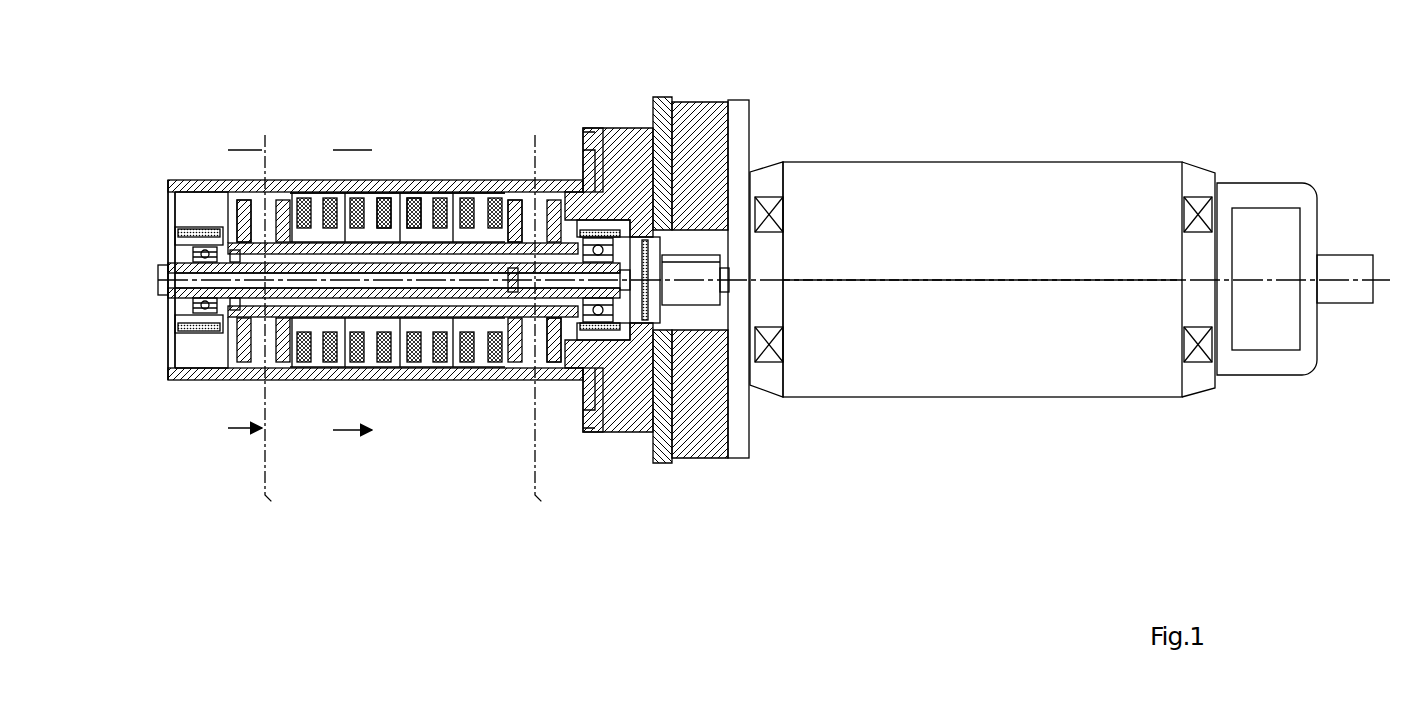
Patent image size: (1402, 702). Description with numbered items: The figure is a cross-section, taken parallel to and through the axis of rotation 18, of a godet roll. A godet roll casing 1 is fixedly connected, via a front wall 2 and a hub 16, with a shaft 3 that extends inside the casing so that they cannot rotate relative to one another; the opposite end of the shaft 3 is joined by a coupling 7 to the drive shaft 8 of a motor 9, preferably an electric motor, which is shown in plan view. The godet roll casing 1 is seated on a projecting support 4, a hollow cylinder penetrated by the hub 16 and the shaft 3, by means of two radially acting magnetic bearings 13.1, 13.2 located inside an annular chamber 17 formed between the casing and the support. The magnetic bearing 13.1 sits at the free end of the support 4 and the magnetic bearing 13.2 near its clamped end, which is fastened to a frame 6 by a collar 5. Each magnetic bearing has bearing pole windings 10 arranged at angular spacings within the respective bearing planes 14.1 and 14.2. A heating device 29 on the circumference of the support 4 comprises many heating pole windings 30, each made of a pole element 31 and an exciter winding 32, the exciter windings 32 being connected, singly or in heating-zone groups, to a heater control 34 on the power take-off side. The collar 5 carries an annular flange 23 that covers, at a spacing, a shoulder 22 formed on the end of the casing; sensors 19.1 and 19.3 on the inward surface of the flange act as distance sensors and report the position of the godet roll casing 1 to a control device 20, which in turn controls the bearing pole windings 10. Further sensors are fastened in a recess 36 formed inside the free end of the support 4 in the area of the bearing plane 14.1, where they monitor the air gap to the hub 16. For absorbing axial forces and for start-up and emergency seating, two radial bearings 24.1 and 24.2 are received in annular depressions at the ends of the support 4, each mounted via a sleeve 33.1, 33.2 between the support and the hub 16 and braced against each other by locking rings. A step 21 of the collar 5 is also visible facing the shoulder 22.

The godet roll casing 1 is at (180, 182).
The front wall 2 is at (167, 195).
The shaft 3 is at (531, 276).
The projecting support 4 is at (397, 222).
The collar 5 is at (661, 106).
The frame 6 is at (693, 103).
The coupling 7 is at (646, 266).
The drive shaft 8 is at (733, 268).
The motor 9 is at (862, 218).
The bearing pole windings 10 is at (283, 357).
The magnetic bearing 13.1 is at (268, 172).
The magnetic bearing 13.2 is at (544, 170).
The bearing plane 14.1 is at (258, 326).
The bearing plane 14.2 is at (452, 326).
The hub 16 is at (262, 258).
The annular chamber 17 is at (200, 357).
The axis of rotation 18 is at (1040, 285).
The sensor 19.1 is at (193, 253).
The sensor 19.3 is at (195, 312).
The control device 20 is at (1277, 327).
The step 21 is at (605, 390).
The shoulder 22 is at (588, 407).
The annular flange 23 is at (596, 132).
The radial bearing 24.1 is at (198, 322).
The radial bearing 24.2 is at (623, 320).
The heating device 29 is at (338, 172).
The heating pole windings 30 is at (440, 208).
The pole element 31 is at (378, 203).
The exciter winding 32 is at (413, 200).
The sleeve 33.1 is at (176, 226).
The sleeve 33.2 is at (607, 333).
The heater control 34 is at (1270, 227).
The recess 36 is at (230, 257).